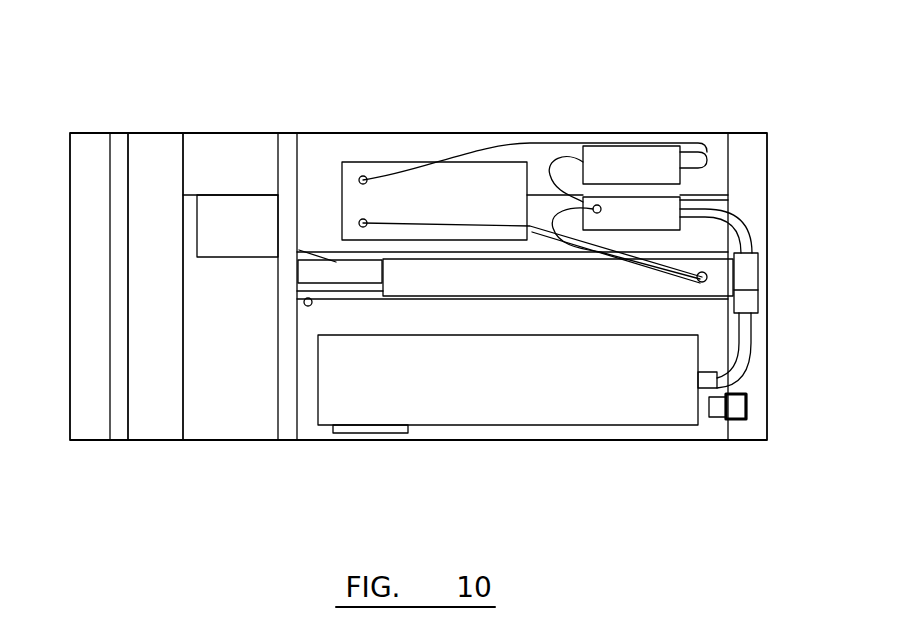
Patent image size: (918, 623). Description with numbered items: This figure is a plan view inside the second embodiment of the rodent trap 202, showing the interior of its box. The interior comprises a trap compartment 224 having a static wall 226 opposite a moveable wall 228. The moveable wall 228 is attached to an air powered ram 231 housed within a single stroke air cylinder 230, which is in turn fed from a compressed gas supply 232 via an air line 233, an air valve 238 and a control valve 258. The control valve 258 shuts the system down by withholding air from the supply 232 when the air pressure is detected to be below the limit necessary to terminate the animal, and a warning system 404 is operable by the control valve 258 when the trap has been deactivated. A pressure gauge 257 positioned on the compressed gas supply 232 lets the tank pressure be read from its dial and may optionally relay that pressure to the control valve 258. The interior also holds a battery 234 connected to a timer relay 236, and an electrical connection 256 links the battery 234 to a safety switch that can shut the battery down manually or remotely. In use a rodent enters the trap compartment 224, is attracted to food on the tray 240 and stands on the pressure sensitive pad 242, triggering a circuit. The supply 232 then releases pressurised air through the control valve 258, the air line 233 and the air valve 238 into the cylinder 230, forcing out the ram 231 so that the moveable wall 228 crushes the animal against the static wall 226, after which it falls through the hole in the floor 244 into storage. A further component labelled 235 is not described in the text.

The rodent trap 202 is at (710, 106).
The trap compartment 224 is at (213, 387).
The static wall 226 is at (118, 317).
The moveable wall 228 is at (296, 301).
The single stroke air cylinder 230 is at (516, 287).
The air powered ram 231 is at (376, 278).
The compressed gas supply 232 is at (477, 392).
The air line 233 is at (763, 350).
The battery 234 is at (423, 209).
The valve 235 is at (758, 294).
The timer relay 236 is at (621, 177).
The air valve 238 is at (621, 225).
The tray 240 is at (212, 178).
The pressure sensitive pad 242 is at (220, 240).
The floor 244 is at (136, 387).
The connection 256 is at (712, 194).
The pressure gauge 257 is at (365, 434).
The control valve 258 is at (720, 412).
The warning system 404 is at (747, 407).